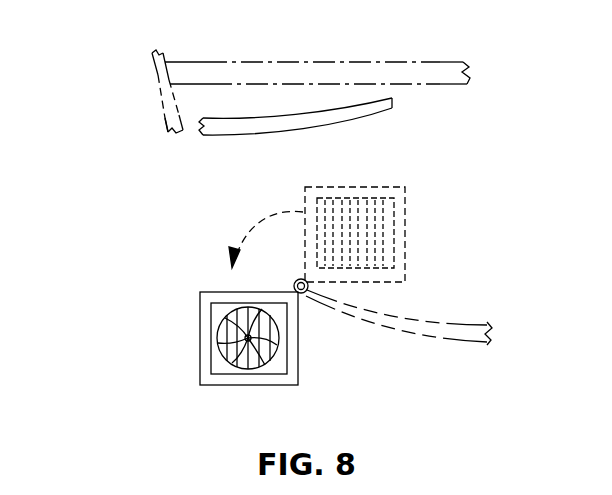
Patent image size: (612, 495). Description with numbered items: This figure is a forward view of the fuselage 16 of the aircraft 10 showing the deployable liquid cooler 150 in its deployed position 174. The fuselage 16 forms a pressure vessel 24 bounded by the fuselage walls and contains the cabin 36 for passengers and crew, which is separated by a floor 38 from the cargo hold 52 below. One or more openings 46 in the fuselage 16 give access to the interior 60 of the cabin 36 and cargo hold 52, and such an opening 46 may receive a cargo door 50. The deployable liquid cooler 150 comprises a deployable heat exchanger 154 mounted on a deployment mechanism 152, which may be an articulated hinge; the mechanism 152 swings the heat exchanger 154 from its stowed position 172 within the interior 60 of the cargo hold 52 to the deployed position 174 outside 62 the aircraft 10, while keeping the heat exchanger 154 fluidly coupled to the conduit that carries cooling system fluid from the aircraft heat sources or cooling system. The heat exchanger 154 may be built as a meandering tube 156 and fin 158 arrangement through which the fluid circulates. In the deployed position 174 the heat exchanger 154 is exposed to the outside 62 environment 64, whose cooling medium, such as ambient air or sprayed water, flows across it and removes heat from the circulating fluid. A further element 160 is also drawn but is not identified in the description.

The aircraft 10 is at (171, 76).
The fuselage 16 is at (197, 76).
The pressure vessel 24 is at (164, 55).
The cabin 36 is at (441, 45).
The floor 38 is at (347, 68).
The openings 46 is at (171, 134).
The cargo door 50 is at (344, 123).
The cargo hold 52 is at (449, 111).
The interior 60 is at (248, 110).
The outside 62 is at (71, 100).
The environment 64 is at (100, 110).
The deployable liquid cooler 150 is at (327, 311).
The deployment mechanism 152 is at (297, 280).
The deployable heat exchanger 154 is at (211, 351).
The meandering tube 156 is at (315, 338).
The fin 158 is at (275, 327).
The hub 160 is at (247, 345).
The stowed position 172 is at (405, 218).
The deployed position 174 is at (273, 363).